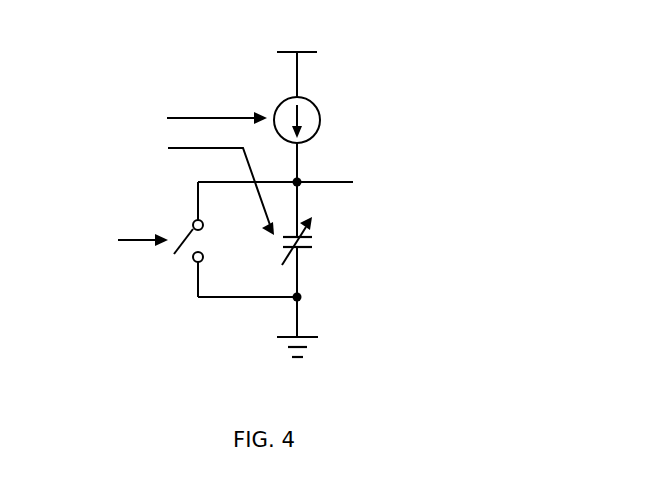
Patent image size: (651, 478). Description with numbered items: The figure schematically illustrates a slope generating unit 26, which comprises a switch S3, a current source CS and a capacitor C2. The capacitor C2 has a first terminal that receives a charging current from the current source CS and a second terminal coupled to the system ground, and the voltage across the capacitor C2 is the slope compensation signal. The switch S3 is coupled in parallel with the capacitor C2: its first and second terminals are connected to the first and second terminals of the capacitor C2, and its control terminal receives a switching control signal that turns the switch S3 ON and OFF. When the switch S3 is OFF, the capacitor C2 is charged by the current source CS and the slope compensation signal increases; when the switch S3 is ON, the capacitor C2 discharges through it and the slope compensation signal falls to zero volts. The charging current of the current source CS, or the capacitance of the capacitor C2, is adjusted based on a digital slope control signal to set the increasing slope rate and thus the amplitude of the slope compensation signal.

The slope generating unit 26 is at (447, 92).
The current source CS is at (318, 120).
The switch S3 is at (205, 239).
The capacitor C2 is at (319, 241).